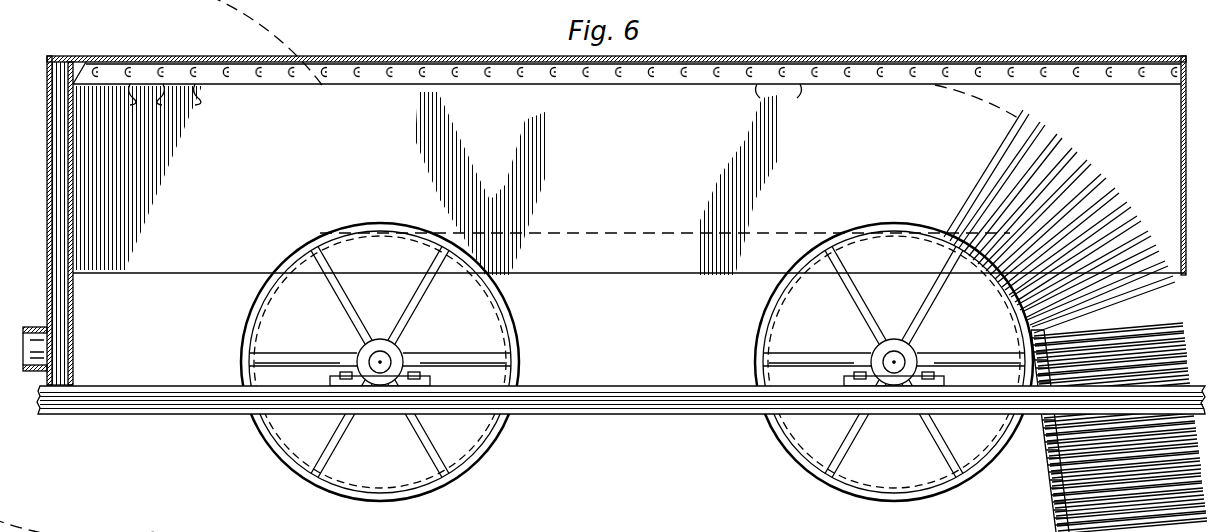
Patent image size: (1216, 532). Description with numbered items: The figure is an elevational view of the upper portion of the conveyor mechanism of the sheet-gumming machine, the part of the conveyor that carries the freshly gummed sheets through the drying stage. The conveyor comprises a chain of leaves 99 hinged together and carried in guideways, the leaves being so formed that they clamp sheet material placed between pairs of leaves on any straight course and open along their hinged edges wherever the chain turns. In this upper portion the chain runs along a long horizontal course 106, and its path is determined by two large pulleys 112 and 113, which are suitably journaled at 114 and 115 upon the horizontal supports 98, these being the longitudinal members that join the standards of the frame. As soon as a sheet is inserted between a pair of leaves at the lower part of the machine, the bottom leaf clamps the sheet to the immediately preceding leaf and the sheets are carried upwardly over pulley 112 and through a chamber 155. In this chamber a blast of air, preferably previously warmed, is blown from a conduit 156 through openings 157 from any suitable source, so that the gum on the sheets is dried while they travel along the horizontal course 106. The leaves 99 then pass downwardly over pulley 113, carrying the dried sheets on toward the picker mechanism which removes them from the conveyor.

The longitudinal member 98 is at (630, 416).
The leaves 99 is at (1130, 196).
The horizontal course 106 is at (665, 231).
The large pulley 112 is at (825, 488).
The large pulley 113 is at (452, 478).
The journal 114 is at (900, 362).
The journal 115 is at (386, 362).
The chamber 155 is at (1103, 70).
The conduit 156 is at (70, 185).
The openings 157 is at (195, 66).